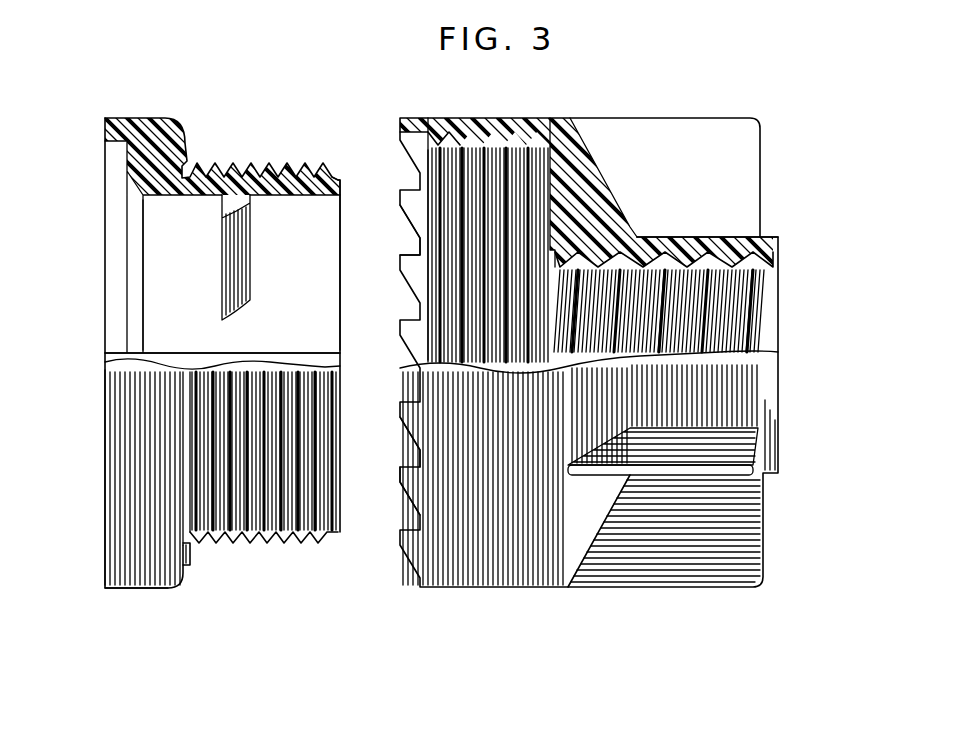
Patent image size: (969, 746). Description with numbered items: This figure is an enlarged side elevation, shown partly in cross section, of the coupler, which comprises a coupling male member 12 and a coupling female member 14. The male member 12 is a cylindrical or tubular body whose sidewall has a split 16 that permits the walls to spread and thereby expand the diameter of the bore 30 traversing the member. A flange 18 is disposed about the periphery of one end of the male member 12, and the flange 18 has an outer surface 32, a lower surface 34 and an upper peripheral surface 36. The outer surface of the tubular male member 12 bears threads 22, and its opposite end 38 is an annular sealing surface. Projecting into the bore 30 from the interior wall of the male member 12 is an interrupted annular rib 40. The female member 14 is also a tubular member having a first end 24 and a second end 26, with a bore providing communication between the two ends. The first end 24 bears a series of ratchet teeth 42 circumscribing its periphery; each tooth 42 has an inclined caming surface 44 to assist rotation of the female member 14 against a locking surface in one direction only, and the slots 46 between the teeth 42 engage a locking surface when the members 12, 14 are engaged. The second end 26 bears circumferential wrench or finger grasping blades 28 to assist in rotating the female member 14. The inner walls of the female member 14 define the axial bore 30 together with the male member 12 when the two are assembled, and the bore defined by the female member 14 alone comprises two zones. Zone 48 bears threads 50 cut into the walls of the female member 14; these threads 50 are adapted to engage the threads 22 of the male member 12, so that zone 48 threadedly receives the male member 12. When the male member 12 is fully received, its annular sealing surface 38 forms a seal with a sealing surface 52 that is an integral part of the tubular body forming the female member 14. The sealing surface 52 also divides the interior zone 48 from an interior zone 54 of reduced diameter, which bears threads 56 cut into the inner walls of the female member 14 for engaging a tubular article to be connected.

The coupling male member 12 is at (197, 655).
The coupling female member 14 is at (613, 622).
The split 16 is at (117, 352).
The flange 18 is at (138, 590).
The threads 22 is at (227, 170).
The first end 24 is at (398, 555).
The second end 26 is at (775, 243).
The grasping blades 28 is at (680, 135).
The axial bore 30 is at (185, 296).
The outer surface 32 is at (155, 487).
The lower surface 34 is at (105, 408).
The upper peripheral surface 36 is at (188, 563).
The sealing surface 38 is at (345, 178).
The interrupted annular rib 40 is at (230, 258).
The ratchet teeth 42 is at (400, 258).
The inclined caming surface 44 is at (410, 437).
The slots 46 is at (420, 482).
The zone 48 is at (487, 157).
The threads 50 is at (438, 142).
The sealing surface 52 is at (550, 172).
The interior zone of reduced diameter 54 is at (747, 293).
The threads 56 is at (757, 263).